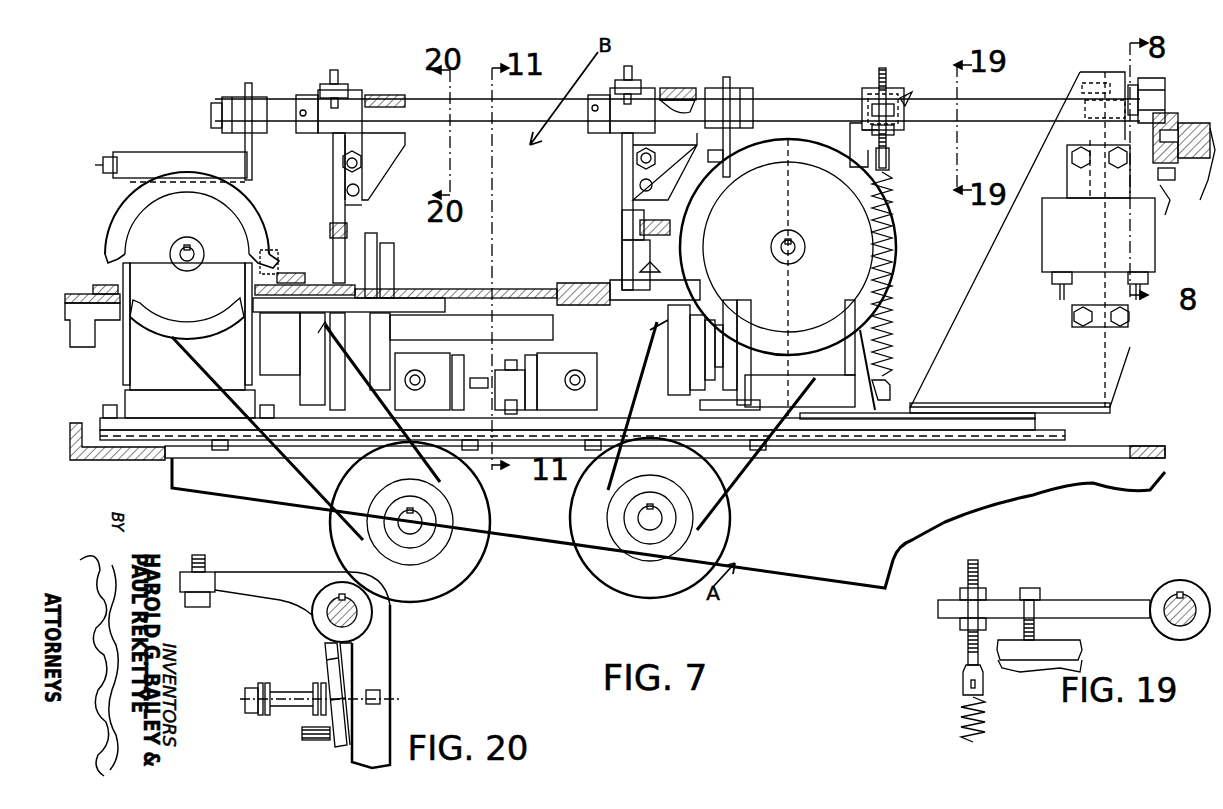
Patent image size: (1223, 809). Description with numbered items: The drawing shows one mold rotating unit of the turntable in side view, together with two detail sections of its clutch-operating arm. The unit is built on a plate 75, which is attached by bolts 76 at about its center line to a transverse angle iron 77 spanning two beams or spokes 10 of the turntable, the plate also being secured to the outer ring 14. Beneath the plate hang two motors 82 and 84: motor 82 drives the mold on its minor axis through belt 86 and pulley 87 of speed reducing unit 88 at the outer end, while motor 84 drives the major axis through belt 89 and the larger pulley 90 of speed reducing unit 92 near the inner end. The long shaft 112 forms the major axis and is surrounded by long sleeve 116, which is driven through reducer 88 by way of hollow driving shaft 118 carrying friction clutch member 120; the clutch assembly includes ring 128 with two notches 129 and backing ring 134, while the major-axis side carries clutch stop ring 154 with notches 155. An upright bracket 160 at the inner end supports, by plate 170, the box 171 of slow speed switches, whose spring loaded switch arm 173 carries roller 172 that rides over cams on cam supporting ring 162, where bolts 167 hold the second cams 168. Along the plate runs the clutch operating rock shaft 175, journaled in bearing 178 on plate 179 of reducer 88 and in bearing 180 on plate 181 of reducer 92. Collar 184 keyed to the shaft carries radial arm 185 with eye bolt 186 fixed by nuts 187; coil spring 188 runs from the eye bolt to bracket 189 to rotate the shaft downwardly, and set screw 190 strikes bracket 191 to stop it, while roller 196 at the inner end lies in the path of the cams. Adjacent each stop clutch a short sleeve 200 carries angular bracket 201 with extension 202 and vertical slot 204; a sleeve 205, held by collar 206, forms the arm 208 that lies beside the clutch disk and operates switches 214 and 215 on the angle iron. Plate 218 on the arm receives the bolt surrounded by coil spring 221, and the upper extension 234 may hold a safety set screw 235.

In FIG. 7, the beams or spokes 10 is at (782, 563).
In FIG. 7, the outer ring 14 is at (110, 455).
In FIG. 7, the plate 75 is at (903, 420).
In FIG. 7, the bolts 76 is at (516, 416).
In FIG. 7, the transverse angle iron 77 is at (490, 368).
In FIG. 7, the motor 82 is at (468, 565).
In FIG. 7, the motor 84 is at (725, 530).
In FIG. 7, the belt 86 is at (266, 442).
In FIG. 7, the pulley 87 is at (214, 325).
In FIG. 7, the speed reducing unit 88 is at (138, 378).
In FIG. 7, the belt 89 is at (810, 380).
In FIG. 7, the pulley 90 is at (866, 260).
In FIG. 7, the speed reducing unit 92 is at (840, 372).
In FIG. 7, the long shaft 112 is at (62, 330).
In FIG. 7, the long sleeve 116 is at (410, 290).
In FIG. 7, the hollow driving shaft 118 is at (292, 272).
In FIG. 7, the friction clutch member 120 is at (250, 256).
In FIG. 7, the ring 128 is at (350, 230).
In FIG. 7, the notches 129 is at (365, 212).
In FIG. 7, the backing ring 134 is at (373, 250).
In FIG. 7, the clutch stop ring 154 is at (572, 283).
In FIG. 7, the notches 155 is at (625, 218).
In FIG. 7, the upright bracket 160 is at (1115, 371).
In FIG. 7, the cam supporting ring 162 is at (1210, 180).
In FIG. 7, the bolts 167 is at (1200, 123).
In FIG. 7, the second cams 168 is at (1172, 113).
In FIG. 7, the plate 170 is at (1092, 327).
In FIG. 7, the box 171 is at (1050, 228).
In FIG. 7, the roller 172 is at (1170, 176).
In FIG. 7, the spring loaded switch arm 173 is at (1165, 205).
In FIG. 7, the clutch operating rock shaft 175 is at (975, 110).
In FIG. 20, the clutch operating rock shaft 175 is at (358, 614).
In FIG. 19, the clutch operating rock shaft 175 is at (1190, 600).
In FIG. 7, the bearing 178 is at (262, 96).
In FIG. 7, the plate 179 is at (254, 139).
In FIG. 7, the bearing 180 is at (735, 100).
In FIG. 7, the plate 181 is at (748, 110).
In FIG. 7, the collar 184 is at (902, 96).
In FIG. 19, the collar 184 is at (1165, 630).
In FIG. 7, the radial arm 185 is at (862, 104).
In FIG. 19, the radial arm 185 is at (1098, 598).
In FIG. 7, the eye bolt 186 is at (882, 75).
In FIG. 19, the eye bolt 186 is at (980, 568).
In FIG. 7, the nuts 187 is at (895, 100).
In FIG. 19, the nuts 187 is at (958, 594).
In FIG. 7, the coil spring 188 is at (893, 332).
In FIG. 19, the coil spring 188 is at (990, 720).
In FIG. 7, the bracket 189 is at (890, 385).
In FIG. 19, the set screw 190 is at (1032, 590).
In FIG. 7, the bracket 191 is at (850, 131).
In FIG. 19, the bracket 191 is at (1062, 650).
In FIG. 7, the roller 196 is at (1160, 84).
In FIG. 7, the short sleeve 200 is at (385, 95).
In FIG. 20, the short sleeve 200 is at (313, 619).
In FIG. 7, the angular bracket 201 is at (402, 156).
In FIG. 20, the angular bracket 201 is at (352, 654).
In FIG. 7, the extension 202 is at (345, 182).
In FIG. 20, the extension 202 is at (325, 666).
In FIG. 20, the vertical slot 204 is at (370, 675).
In FIG. 7, the sleeve 205 is at (362, 92).
In FIG. 7, the collar 206 is at (345, 140).
In FIG. 20, the arm 208 is at (385, 735).
In FIG. 7, the switch 214 is at (558, 366).
In FIG. 7, the switch 215 is at (430, 356).
In FIG. 20, the plate 218 is at (358, 720).
In FIG. 20, the coil spring 221 is at (268, 716).
In FIG. 7, the extension 234 is at (326, 84).
In FIG. 20, the extension 234 is at (245, 572).
In FIG. 7, the set screw 235 is at (338, 72).
In FIG. 20, the set screw 235 is at (200, 558).